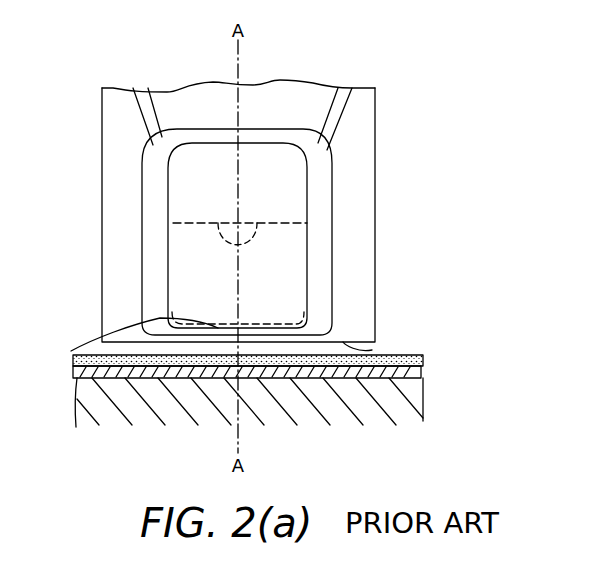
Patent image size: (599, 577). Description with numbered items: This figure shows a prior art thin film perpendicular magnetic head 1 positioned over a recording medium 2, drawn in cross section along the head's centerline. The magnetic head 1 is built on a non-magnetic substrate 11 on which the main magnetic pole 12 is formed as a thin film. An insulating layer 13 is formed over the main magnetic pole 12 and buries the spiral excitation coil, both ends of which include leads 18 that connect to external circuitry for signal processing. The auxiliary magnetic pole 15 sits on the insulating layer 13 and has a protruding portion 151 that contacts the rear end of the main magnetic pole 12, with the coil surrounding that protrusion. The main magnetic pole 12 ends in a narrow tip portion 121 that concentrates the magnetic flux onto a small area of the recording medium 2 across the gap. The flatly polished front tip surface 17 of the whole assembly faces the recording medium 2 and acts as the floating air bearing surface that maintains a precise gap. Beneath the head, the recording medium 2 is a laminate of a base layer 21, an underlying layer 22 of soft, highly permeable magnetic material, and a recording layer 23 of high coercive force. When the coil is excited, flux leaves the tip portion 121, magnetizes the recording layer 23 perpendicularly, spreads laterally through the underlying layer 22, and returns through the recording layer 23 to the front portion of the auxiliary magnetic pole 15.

The magnetic head 1 is at (387, 139).
The non-magnetic substrate 11 is at (375, 257).
The insulating layer 13 is at (357, 203).
The leads 18 is at (138, 86).
The auxiliary magnetic pole 15 is at (187, 183).
The main magnetic pole 12 is at (191, 223).
The protruding portion 151 is at (230, 232).
The tip portion 121 is at (237, 350).
The front tip surface 17 is at (372, 350).
The recording medium 2 is at (452, 350).
The base layer 21 is at (406, 400).
The underlying layer 22 is at (405, 371).
The recording layer 23 is at (413, 359).